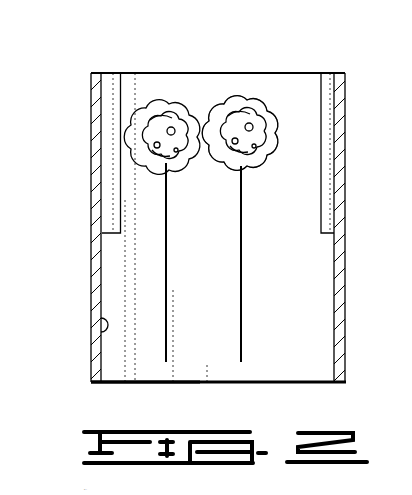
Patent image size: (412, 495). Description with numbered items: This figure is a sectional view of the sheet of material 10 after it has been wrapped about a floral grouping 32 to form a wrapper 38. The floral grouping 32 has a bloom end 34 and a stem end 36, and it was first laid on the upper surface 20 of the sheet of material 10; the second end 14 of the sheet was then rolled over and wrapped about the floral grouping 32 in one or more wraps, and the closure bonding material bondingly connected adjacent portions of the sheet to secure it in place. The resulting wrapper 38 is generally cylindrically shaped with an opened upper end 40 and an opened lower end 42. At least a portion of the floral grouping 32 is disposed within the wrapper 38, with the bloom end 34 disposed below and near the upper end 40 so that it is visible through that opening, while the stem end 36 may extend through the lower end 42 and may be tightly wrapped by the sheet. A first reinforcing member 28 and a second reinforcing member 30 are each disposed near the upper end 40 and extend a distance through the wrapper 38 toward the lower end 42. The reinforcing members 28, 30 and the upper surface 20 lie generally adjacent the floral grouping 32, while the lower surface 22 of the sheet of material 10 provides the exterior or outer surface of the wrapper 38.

The sheet of material 10 is at (93, 118).
The second end 14 is at (45, 162).
The upper surface 20 is at (93, 284).
The lower surface 22 is at (104, 330).
The first reinforcing member 28 is at (103, 236).
The second reinforcing member 30 is at (320, 220).
The floral grouping 32 is at (246, 192).
The bloom end 34 is at (262, 100).
The stem end 36 is at (247, 349).
The wrapper 38 is at (92, 223).
The upper end 40 is at (104, 73).
The lower end 42 is at (97, 383).